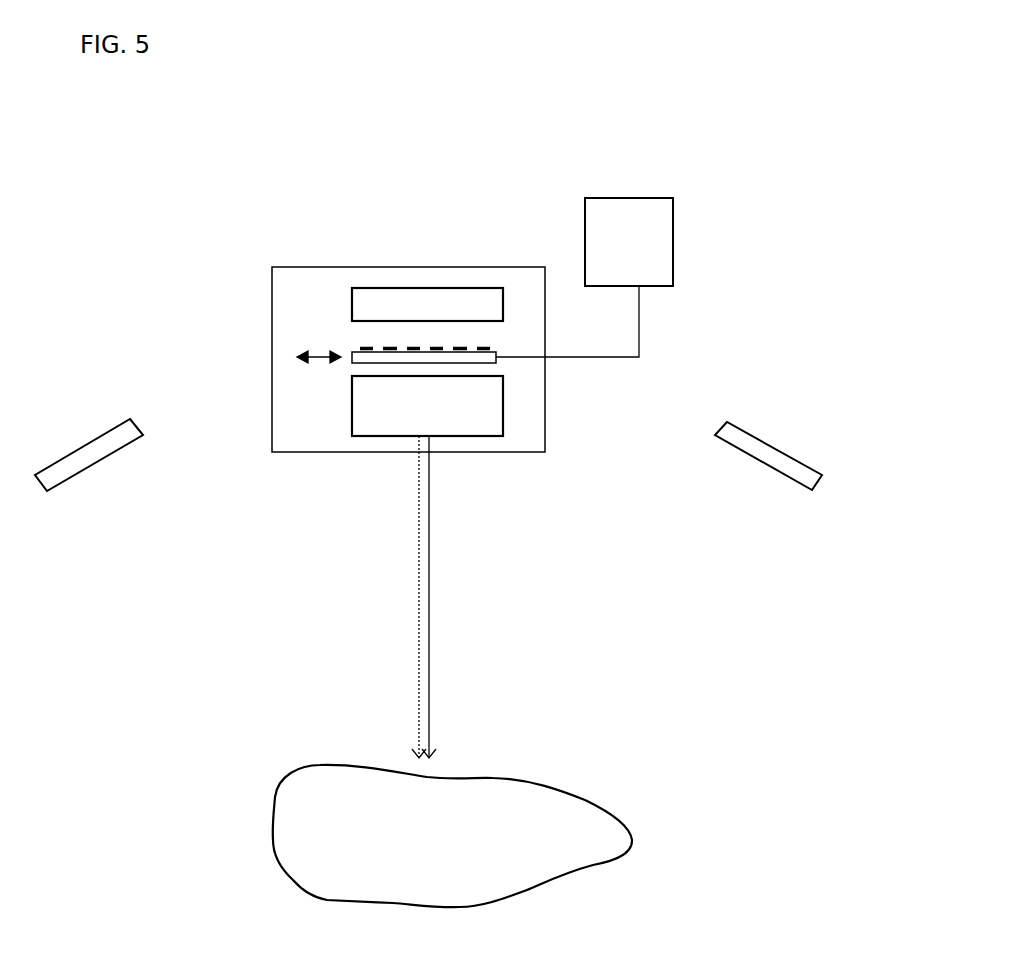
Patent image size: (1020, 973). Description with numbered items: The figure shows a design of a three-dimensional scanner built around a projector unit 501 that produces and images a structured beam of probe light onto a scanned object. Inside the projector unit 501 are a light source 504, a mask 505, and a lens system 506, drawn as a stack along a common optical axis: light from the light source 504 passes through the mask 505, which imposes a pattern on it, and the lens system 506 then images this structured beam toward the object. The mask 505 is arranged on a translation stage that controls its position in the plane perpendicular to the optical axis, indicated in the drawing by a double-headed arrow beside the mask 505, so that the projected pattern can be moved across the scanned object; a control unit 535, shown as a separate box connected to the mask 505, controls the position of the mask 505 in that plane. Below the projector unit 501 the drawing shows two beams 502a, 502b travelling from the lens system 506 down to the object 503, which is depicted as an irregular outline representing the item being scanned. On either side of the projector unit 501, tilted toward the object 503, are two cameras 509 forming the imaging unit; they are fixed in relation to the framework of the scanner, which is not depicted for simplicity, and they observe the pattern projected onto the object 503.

The projector unit 501 is at (408, 342).
The light source 504 is at (427, 253).
The mask 505 is at (316, 308).
The lens system 506 is at (340, 398).
The control unit 535 is at (584, 260).
The cameras 509 is at (435, 454).
The illumination light 502a is at (460, 597).
The patterned light 502b is at (387, 597).
The object 503 is at (478, 836).